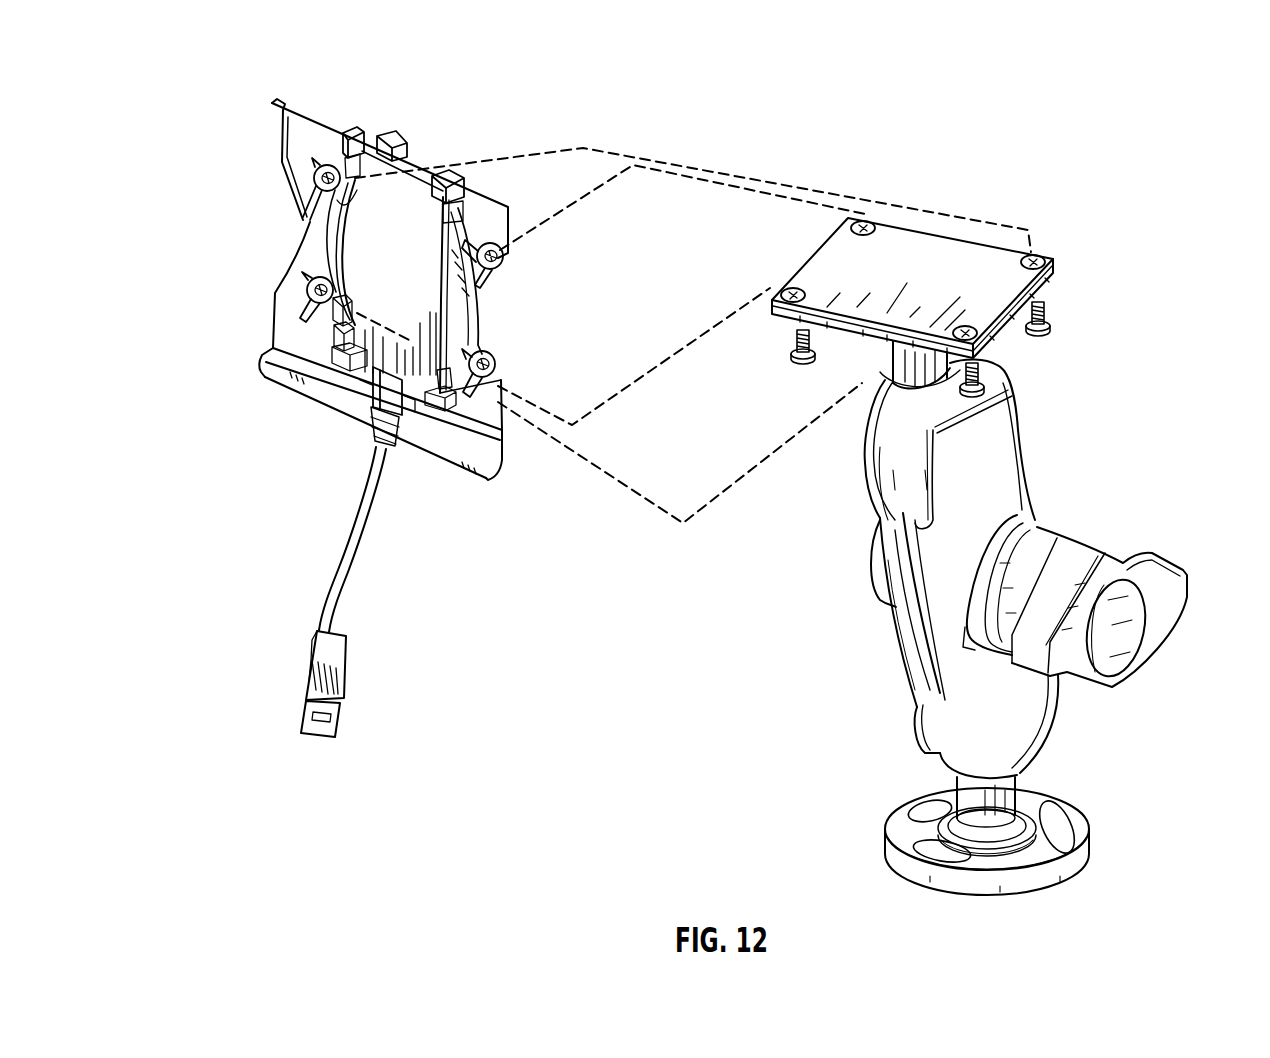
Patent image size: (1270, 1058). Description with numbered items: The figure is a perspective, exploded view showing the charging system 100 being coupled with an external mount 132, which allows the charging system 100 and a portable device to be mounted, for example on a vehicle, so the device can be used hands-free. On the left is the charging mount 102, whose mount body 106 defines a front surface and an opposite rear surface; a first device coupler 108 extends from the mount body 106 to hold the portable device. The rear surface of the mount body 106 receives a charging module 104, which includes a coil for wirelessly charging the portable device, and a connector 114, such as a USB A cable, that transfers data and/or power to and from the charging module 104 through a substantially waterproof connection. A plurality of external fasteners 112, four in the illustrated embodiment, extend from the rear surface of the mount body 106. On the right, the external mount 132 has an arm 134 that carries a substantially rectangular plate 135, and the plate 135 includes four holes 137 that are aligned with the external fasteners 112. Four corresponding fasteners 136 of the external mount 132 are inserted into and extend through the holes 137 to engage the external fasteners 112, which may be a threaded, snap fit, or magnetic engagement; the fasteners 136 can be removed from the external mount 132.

The charging system 100 is at (255, 78).
The charging mount 102 is at (300, 106).
The charging module 104 is at (421, 277).
The mount body 106 is at (300, 131).
The first device coupler 108 is at (397, 149).
The external fasteners 112 is at (313, 173).
The connector 114 is at (313, 627).
The external mount 132 is at (1135, 269).
The arm 134 is at (893, 369).
The plate 135 is at (933, 259).
The fasteners 136 is at (792, 346).
The holes 137 is at (789, 290).